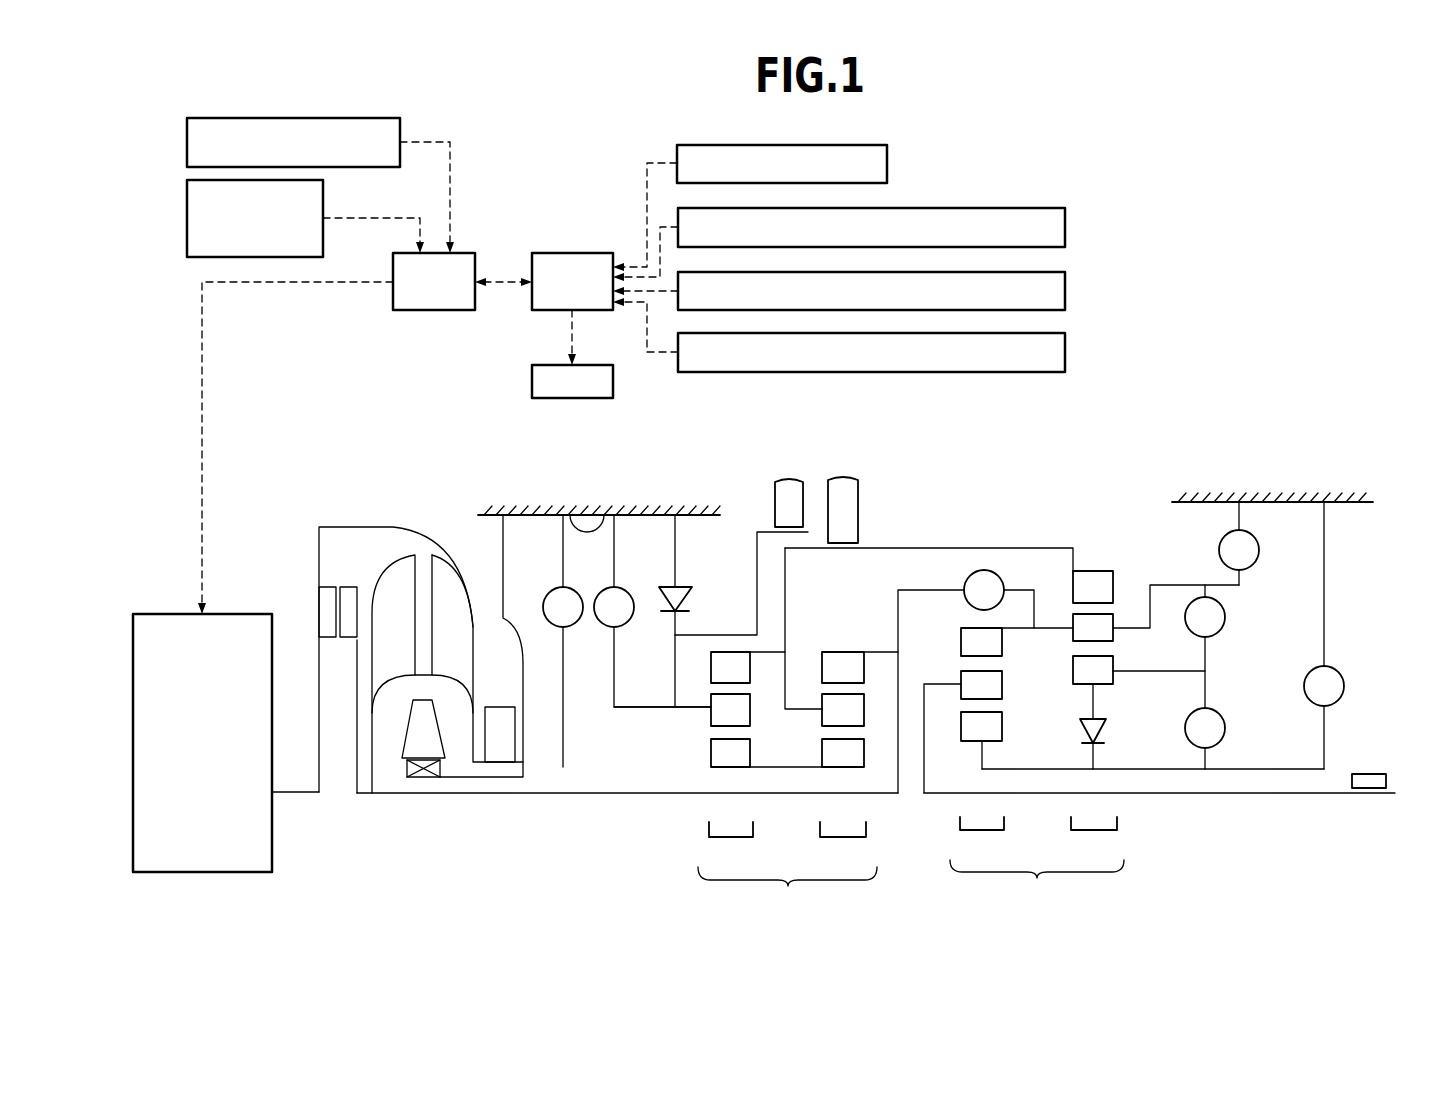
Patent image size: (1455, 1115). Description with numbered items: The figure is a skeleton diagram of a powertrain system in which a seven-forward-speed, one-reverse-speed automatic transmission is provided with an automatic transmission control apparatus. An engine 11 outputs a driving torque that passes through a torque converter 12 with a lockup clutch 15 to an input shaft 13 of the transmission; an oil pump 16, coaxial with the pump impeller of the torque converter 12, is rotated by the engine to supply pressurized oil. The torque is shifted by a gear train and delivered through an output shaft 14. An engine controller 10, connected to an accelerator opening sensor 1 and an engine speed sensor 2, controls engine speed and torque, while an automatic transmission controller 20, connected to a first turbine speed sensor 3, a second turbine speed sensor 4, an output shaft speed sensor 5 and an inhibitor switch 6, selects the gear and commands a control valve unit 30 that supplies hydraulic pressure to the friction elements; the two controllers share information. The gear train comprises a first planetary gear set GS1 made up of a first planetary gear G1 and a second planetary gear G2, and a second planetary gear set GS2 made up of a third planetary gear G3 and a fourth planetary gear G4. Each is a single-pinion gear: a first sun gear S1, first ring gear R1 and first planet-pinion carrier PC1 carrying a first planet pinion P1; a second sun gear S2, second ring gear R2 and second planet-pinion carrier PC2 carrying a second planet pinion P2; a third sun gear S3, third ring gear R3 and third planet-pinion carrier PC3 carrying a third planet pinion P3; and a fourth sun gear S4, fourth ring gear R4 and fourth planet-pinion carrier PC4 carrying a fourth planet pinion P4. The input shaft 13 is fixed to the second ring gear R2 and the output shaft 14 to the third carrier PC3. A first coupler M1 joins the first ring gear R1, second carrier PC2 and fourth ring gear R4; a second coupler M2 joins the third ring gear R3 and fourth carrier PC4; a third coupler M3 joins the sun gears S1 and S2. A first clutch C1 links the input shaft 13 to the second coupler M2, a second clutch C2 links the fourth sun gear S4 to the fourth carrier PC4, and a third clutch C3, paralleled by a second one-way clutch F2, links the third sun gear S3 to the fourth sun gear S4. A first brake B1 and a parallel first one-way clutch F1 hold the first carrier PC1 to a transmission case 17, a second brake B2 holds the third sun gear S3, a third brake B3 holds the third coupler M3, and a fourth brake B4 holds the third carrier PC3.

The accelerator opening sensor 1 is at (187, 142).
The engine speed sensor 2 is at (187, 218).
The first turbine speed sensor 3 is at (1065, 228).
The second turbine speed sensor 4 is at (1065, 291).
The output shaft speed sensor 5 is at (1065, 352).
The inhibitor switch 6 is at (887, 164).
The engine controller 10 is at (433, 310).
The engine 11 is at (238, 614).
The torque converter 12 is at (398, 610).
The input shaft 13 is at (600, 795).
The output shaft 14 is at (1207, 795).
The lockup clutch 15 is at (332, 570).
The oil pump 16 is at (501, 707).
The transmission case 17 is at (600, 515).
The automatic transmission controller 20 is at (572, 253).
The control valve unit 30 is at (532, 382).
The first brake B1 is at (608, 589).
The second brake B2 is at (1343, 684).
The third brake B3 is at (553, 589).
The fourth brake B4 is at (1258, 547).
The first clutch C1 is at (966, 580).
The second clutch C2 is at (1225, 617).
The third clutch C3 is at (1225, 728).
The first one-way clutch F1 is at (686, 576).
The second one-way clutch F2 is at (1108, 736).
The first planetary gear G1 is at (731, 845).
The second planetary gear G2 is at (843, 845).
The third planetary gear G3 is at (982, 841).
The fourth planetary gear G4 is at (1094, 841).
The first planetary gear set GS1 is at (787, 891).
The second planetary gear set GS2 is at (1037, 884).
The first coupler M1 is at (986, 548).
The second coupler M2 is at (1024, 630).
The third coupler M3 is at (770, 768).
The first planet pinion P1 is at (704, 652).
The second planet pinion P2 is at (820, 652).
The third planet pinion P3 is at (1003, 690).
The fourth planet pinion P4 is at (1114, 618).
The first planet-pinion carrier PC1 is at (688, 709).
The second planet-pinion carrier PC2 is at (792, 709).
The third planet-pinion carrier PC3 is at (948, 684).
The fourth planet-pinion carrier PC4 is at (1120, 634).
The first ring gear R1 is at (735, 652).
The second ring gear R2 is at (844, 652).
The third ring gear R3 is at (962, 628).
The fourth ring gear R4 is at (1093, 571).
The first sun gear S1 is at (711, 755).
The second sun gear S2 is at (844, 768).
The third sun gear S3 is at (1003, 730).
The fourth sun gear S4 is at (1114, 672).